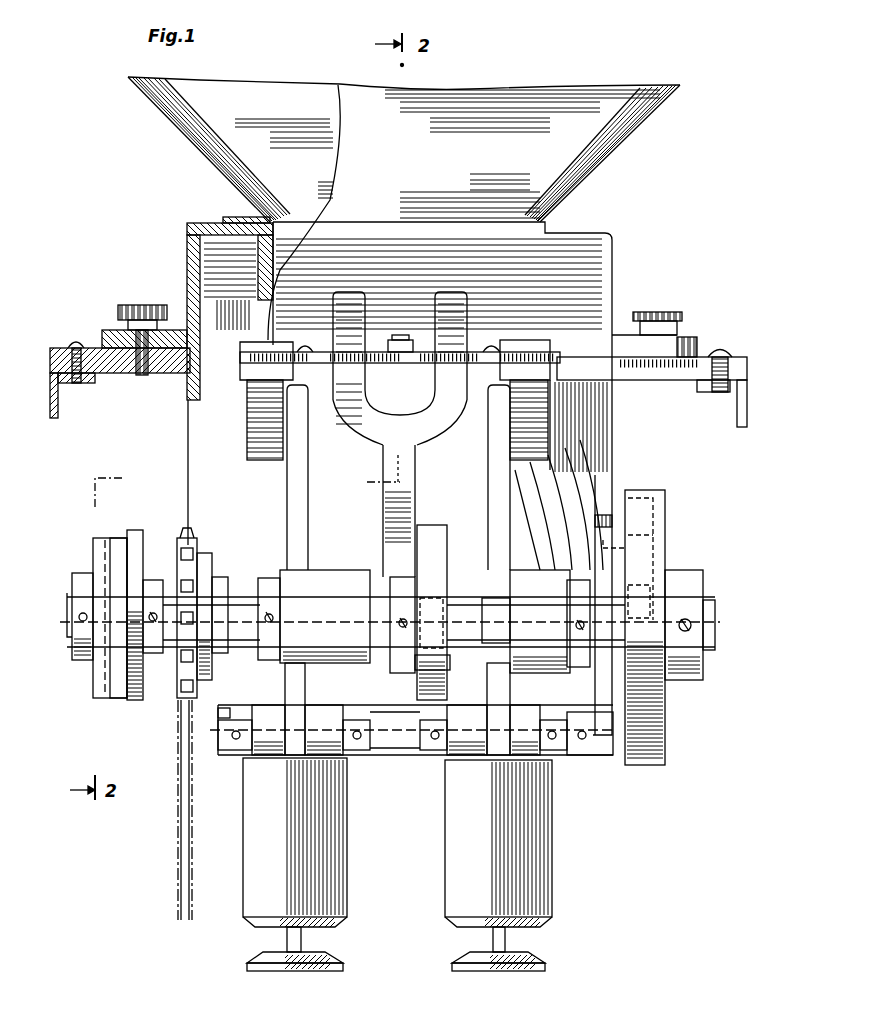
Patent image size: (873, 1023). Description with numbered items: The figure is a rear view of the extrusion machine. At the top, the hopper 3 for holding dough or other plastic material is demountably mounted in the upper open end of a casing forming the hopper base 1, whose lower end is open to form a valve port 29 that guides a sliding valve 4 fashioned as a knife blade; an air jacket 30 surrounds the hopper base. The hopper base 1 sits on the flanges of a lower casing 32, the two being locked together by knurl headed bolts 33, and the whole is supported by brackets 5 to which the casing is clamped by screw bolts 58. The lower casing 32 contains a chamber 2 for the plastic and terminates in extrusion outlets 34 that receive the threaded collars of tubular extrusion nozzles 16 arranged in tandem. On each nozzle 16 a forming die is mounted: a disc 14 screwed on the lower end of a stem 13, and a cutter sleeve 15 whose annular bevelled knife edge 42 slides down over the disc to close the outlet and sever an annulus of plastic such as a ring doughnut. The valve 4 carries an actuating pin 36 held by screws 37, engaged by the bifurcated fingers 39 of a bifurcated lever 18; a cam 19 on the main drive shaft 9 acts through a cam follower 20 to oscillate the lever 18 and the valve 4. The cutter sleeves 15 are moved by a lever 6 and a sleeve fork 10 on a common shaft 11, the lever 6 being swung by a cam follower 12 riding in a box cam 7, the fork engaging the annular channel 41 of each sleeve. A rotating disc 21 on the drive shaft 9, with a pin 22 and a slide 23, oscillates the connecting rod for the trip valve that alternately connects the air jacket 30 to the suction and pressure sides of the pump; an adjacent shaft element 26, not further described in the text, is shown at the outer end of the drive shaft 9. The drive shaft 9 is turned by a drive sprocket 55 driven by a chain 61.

The hopper base 1 is at (613, 250).
The chamber 2 is at (613, 410).
The hopper 3 is at (620, 143).
The sliding valve 4 is at (413, 364).
The brackets 5 is at (66, 380).
The lever 6 is at (605, 540).
The box cam 7 is at (645, 556).
The main drive shaft 9 is at (712, 620).
The sleeve fork 10 is at (358, 758).
The common shaft 11 is at (222, 738).
The cam follower 12 is at (655, 572).
The stem 13 is at (492, 938).
The disc 14 is at (333, 968).
The cutter sleeve 15 is at (450, 864).
The extrusion nozzle 16 is at (418, 690).
The bifurcated lever 18 is at (386, 555).
The cam 19 is at (436, 525).
The cam follower 20 is at (437, 596).
The rotating disc 21 is at (140, 540).
The pin 22 is at (118, 535).
The slide 23 is at (95, 700).
The collar 26 is at (77, 660).
The valve port 29 is at (215, 268).
The air jacket 30 is at (220, 302).
The lower casing 32 is at (195, 432).
The knurl headed bolts 33 is at (130, 305).
The extrusion outlets 34 is at (240, 655).
The actuating pin 36 is at (413, 338).
The screws 37 is at (304, 345).
The bifurcated fingers 39 is at (349, 292).
The annular channel 41 is at (218, 716).
The bevelled knife edge 42 is at (340, 924).
The drive sprocket 55 is at (175, 690).
The screw bolts 58 is at (76, 345).
The chain 61 is at (178, 865).